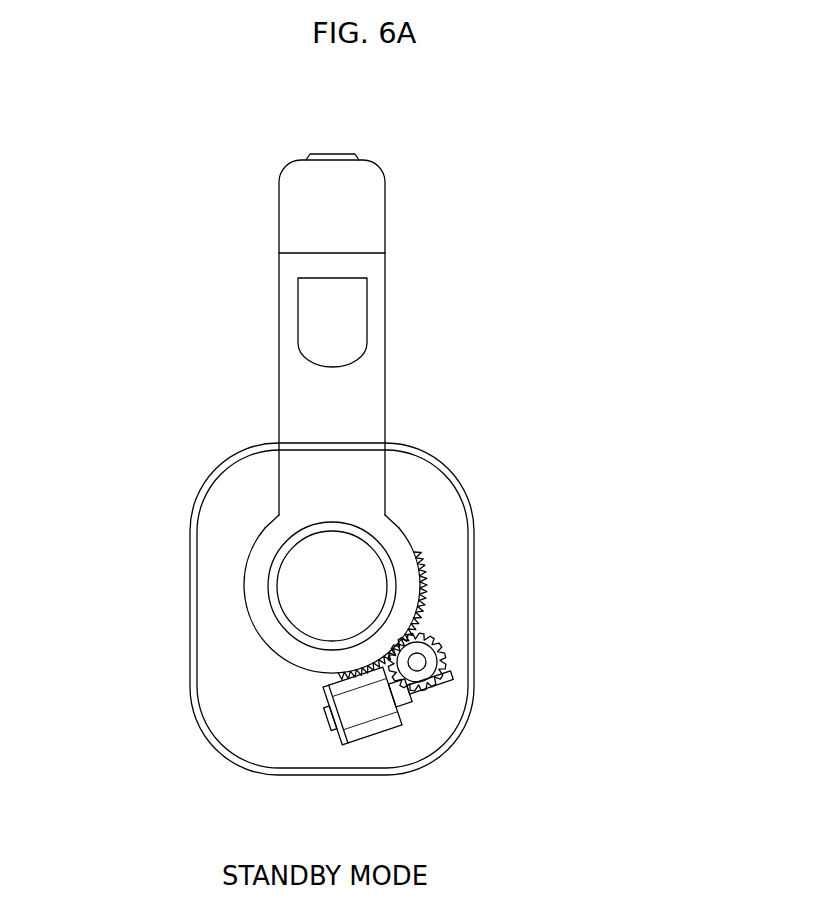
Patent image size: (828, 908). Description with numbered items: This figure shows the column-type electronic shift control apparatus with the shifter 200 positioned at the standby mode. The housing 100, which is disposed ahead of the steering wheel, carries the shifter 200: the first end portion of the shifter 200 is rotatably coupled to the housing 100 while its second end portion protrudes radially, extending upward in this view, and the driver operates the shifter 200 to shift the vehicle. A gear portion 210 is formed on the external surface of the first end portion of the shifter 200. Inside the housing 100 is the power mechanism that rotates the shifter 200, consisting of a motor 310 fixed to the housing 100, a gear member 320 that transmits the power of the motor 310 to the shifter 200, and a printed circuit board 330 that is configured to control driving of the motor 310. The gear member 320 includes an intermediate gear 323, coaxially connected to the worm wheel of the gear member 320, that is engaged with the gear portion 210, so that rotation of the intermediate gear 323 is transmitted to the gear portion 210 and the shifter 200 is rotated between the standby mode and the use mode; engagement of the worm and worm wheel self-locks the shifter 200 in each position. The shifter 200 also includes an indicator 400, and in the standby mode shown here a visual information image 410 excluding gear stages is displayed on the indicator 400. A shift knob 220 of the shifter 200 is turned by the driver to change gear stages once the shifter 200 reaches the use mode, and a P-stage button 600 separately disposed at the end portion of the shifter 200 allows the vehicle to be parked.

The housing 100 is at (190, 582).
The shifter 200 is at (332, 376).
The gear portion 210 is at (421, 583).
The shift knob 220 is at (374, 213).
The motor 310 is at (367, 715).
The gear member 320 is at (520, 663).
The intermediate gear 323 is at (445, 653).
The printed circuit board 330 is at (237, 657).
The indicator 400 is at (223, 322).
The visual information image 410 is at (316, 325).
The P-stage button 600 is at (332, 154).